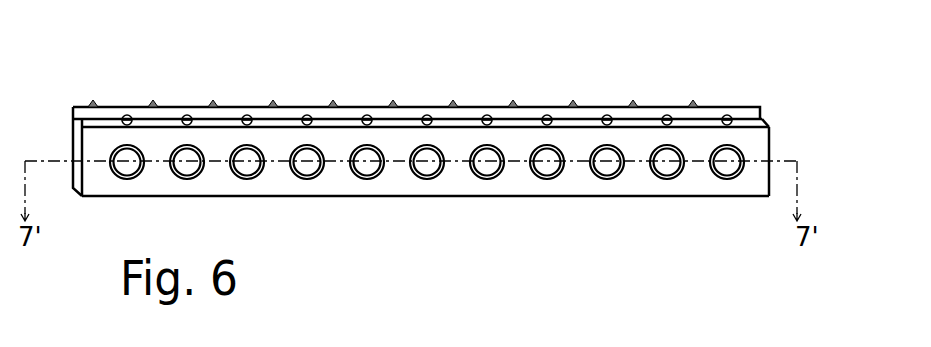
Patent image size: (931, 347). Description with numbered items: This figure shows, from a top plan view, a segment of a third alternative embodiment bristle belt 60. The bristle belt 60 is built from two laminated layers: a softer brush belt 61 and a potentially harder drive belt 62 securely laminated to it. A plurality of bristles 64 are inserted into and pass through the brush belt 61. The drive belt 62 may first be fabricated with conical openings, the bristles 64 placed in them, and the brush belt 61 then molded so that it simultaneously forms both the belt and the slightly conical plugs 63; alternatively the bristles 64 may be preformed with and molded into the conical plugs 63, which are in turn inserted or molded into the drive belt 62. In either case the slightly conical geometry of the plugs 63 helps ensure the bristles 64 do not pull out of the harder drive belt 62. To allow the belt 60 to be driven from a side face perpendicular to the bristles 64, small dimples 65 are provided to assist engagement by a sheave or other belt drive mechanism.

The bristle belt 60 is at (256, 31).
The brush belt 61 is at (762, 108).
The drive belt 62 is at (769, 127).
The conical plugs 63 is at (547, 180).
The bristles 64 is at (513, 104).
The dimples 65 is at (667, 115).